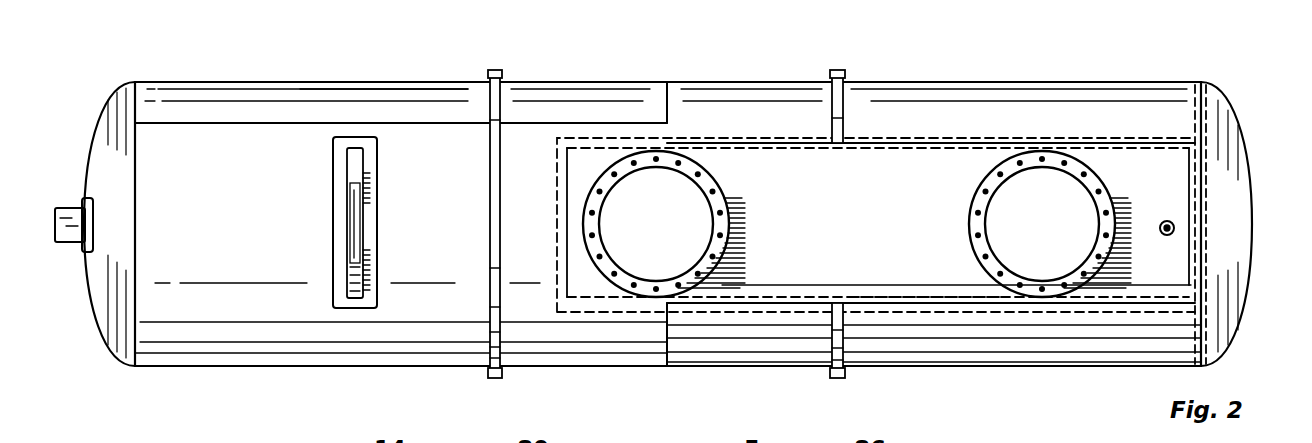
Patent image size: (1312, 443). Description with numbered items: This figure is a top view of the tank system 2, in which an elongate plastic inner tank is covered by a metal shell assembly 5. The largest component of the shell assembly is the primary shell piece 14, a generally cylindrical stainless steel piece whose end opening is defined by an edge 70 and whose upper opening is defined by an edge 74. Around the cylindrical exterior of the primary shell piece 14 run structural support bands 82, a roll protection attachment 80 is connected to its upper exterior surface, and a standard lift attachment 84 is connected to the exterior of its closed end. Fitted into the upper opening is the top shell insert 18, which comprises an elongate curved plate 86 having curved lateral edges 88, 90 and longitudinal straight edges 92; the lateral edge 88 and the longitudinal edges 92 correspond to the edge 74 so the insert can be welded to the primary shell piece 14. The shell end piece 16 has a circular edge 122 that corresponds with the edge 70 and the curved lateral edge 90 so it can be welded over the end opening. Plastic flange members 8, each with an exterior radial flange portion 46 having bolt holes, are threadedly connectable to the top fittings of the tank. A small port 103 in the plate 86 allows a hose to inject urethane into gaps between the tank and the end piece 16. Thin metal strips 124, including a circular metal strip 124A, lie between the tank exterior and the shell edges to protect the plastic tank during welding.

The tank system 2 is at (384, 69).
The metal shell assembly 5 is at (436, 96).
The plastic flange member 8 is at (722, 196).
The primary shell piece 14 is at (209, 108).
The shell end piece 16 is at (1238, 183).
The top shell insert 18 is at (855, 220).
The exterior radial flange portion 46 is at (716, 220).
The edge 70 is at (1198, 200).
The edge 74 is at (930, 296).
The roll protection attachment 80 is at (348, 215).
The structural support band 82 is at (488, 256).
The standard lift attachment 84 is at (80, 205).
The elongate curved plate 86 is at (931, 220).
The curved lateral edge 88 is at (557, 216).
The curved lateral edge 90 is at (1202, 268).
The longitudinal straight edge 92 is at (993, 140).
The port 103 is at (1175, 228).
The circular edge 122 is at (1197, 170).
The thin metal strip 124 is at (729, 140).
The circular metal strip 124A is at (848, 279).